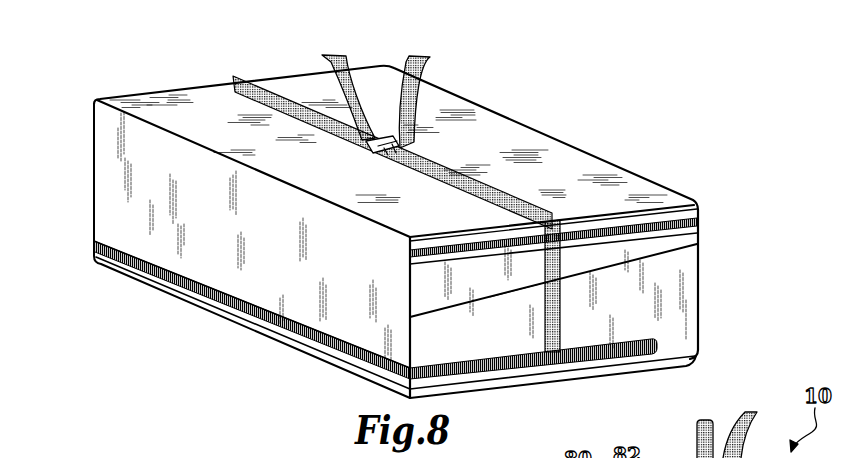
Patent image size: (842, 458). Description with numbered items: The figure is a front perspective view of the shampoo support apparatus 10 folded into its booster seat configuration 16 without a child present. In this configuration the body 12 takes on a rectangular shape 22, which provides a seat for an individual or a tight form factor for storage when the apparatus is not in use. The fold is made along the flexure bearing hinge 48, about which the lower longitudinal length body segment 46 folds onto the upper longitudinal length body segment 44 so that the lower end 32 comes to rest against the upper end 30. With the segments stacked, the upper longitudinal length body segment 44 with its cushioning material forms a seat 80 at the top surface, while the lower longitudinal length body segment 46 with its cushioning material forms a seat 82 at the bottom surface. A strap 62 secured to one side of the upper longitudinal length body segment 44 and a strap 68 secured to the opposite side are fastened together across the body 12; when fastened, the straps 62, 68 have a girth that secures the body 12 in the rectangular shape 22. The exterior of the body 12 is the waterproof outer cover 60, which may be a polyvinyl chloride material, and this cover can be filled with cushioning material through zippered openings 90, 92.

The shampoo support apparatus 10 is at (181, 73).
The body 12 is at (201, 252).
The booster seat configuration 16 is at (250, 272).
The rectangular shape 22 is at (283, 80).
The upper end 30 is at (698, 243).
The lower end 32 is at (700, 232).
The upper longitudinal length body segment 44 is at (680, 305).
The lower longitudinal length body segment 46 is at (627, 248).
The flexure bearing hinge 48 is at (409, 317).
The outer cover 60 is at (107, 165).
The strap 62 is at (548, 215).
The strap 68 is at (310, 103).
The seat 80 is at (513, 286).
The seat 82 is at (518, 143).
The zippered opening 90 is at (280, 322).
The zippered opening 92 is at (642, 224).